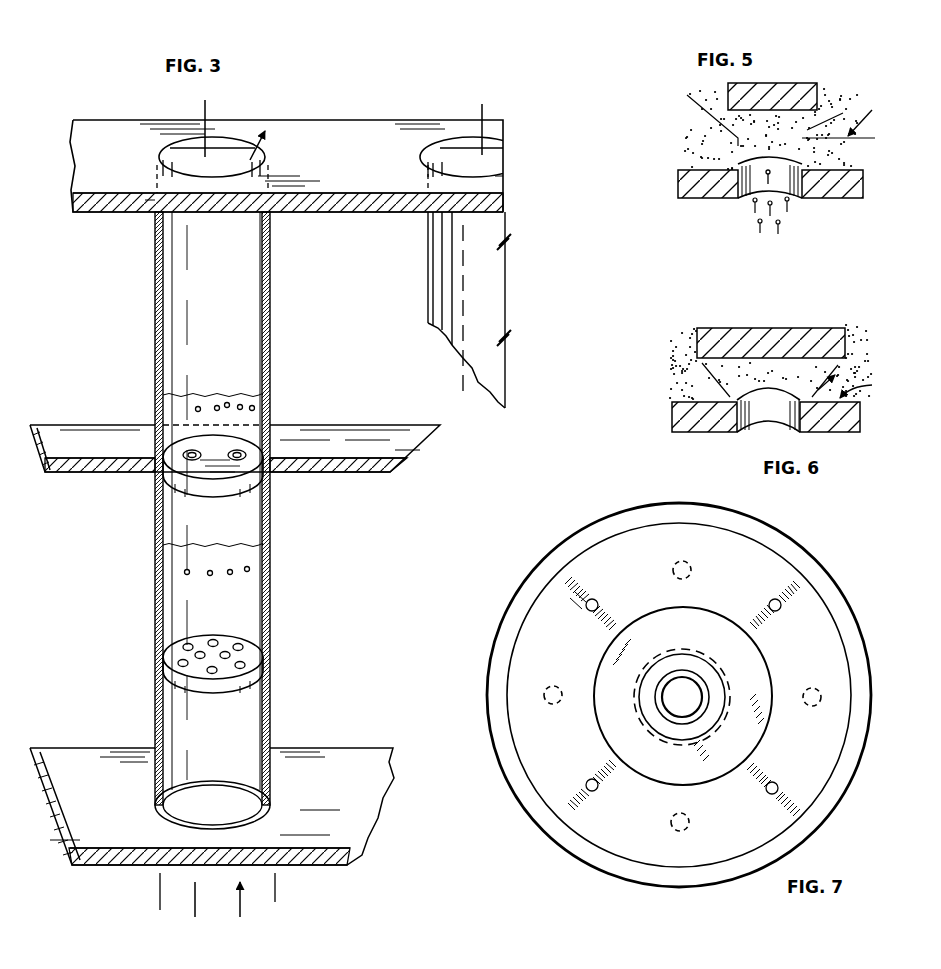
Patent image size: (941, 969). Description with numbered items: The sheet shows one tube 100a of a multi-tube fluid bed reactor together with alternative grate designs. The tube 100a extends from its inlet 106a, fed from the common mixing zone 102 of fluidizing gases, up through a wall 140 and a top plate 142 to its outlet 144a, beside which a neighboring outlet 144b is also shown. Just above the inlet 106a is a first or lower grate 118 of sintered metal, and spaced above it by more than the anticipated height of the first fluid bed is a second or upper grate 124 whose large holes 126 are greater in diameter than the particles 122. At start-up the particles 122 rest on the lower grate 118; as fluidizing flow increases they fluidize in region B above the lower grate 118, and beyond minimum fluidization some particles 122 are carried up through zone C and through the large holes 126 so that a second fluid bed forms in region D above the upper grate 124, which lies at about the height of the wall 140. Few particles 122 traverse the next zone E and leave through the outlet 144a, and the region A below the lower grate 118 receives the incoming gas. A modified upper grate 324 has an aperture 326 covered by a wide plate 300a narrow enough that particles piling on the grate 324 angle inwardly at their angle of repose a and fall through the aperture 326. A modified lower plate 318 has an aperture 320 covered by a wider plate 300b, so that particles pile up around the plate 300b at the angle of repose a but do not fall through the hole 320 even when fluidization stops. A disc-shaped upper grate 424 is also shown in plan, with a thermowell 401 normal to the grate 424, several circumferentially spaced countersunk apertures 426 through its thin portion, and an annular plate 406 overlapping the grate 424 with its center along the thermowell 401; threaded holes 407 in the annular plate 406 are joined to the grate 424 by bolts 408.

In FIG. 3, the top plate 142 is at (365, 204).
In FIG. 3, the outlet 144a is at (220, 157).
In FIG. 3, the opening in top plate 144b is at (473, 155).
In FIG. 3, the tube 100a is at (157, 627).
In FIG. 3, the zone E is at (200, 257).
In FIG. 3, the region D is at (185, 407).
In FIG. 3, the zone C is at (238, 505).
In FIG. 3, the region B is at (228, 615).
In FIG. 3, the zone A is at (218, 717).
In FIG. 3, the particles 122 is at (240, 404).
In FIG. 3, the wall 140 is at (317, 437).
In FIG. 3, the upper grate 124 is at (184, 485).
In FIG. 3, the large holes 126 is at (187, 458).
In FIG. 3, the lower grate 118 is at (197, 685).
In FIG. 3, the inlet 106a is at (195, 808).
In FIG. 3, the mixing zone 102 is at (177, 896).
In FIG. 5, the wide plate 300a is at (743, 93).
In FIG. 5, the modified upper grate 324 is at (690, 183).
In FIG. 5, the aperture 326 is at (788, 177).
In FIG. 5, the angle of repose a is at (784, 120).
In FIG. 6, the angle of repose a is at (791, 381).
In FIG. 6, the wider plate 300b is at (782, 311).
In FIG. 6, the modified lower plate 318 is at (680, 413).
In FIG. 6, the aperture 320 is at (770, 408).
In FIG. 7, the disc-shaped upper grate 424 is at (518, 603).
In FIG. 7, the annular plate 406 is at (585, 570).
In FIG. 7, the threaded holes 407 is at (598, 600).
In FIG. 7, the bolts 408 is at (588, 611).
In FIG. 7, the thermowell 401 is at (674, 675).
In FIG. 7, the apertures 426 is at (810, 707).